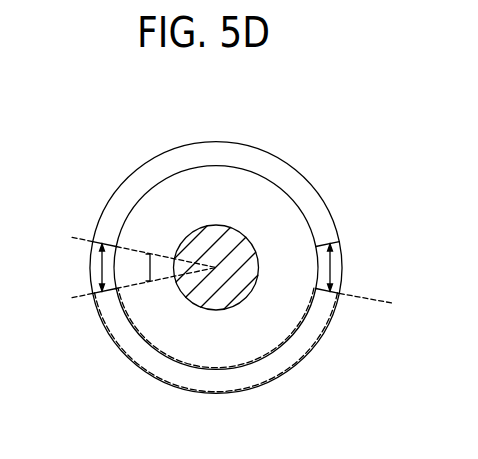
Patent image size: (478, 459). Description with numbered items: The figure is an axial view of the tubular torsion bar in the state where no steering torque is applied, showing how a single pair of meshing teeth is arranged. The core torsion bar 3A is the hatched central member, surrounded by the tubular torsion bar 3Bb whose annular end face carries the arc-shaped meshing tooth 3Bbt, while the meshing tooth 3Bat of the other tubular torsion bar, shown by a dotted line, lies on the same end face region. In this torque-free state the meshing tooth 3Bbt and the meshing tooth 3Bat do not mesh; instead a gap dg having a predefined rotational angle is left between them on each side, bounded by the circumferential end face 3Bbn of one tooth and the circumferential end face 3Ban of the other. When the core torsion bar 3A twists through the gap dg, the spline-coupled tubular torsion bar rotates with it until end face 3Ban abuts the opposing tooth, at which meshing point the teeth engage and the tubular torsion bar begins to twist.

The tubular torsion bar 3Bb is at (112, 191).
The meshing tooth 3Bbt is at (288, 172).
The end face of the meshing tooth 3Bbn is at (336, 250).
The end face of the meshing tooth 3Ban is at (392, 303).
The meshing tooth 3Bat is at (143, 363).
The core torsion bar 3A is at (233, 306).
The gap dg is at (91, 266).